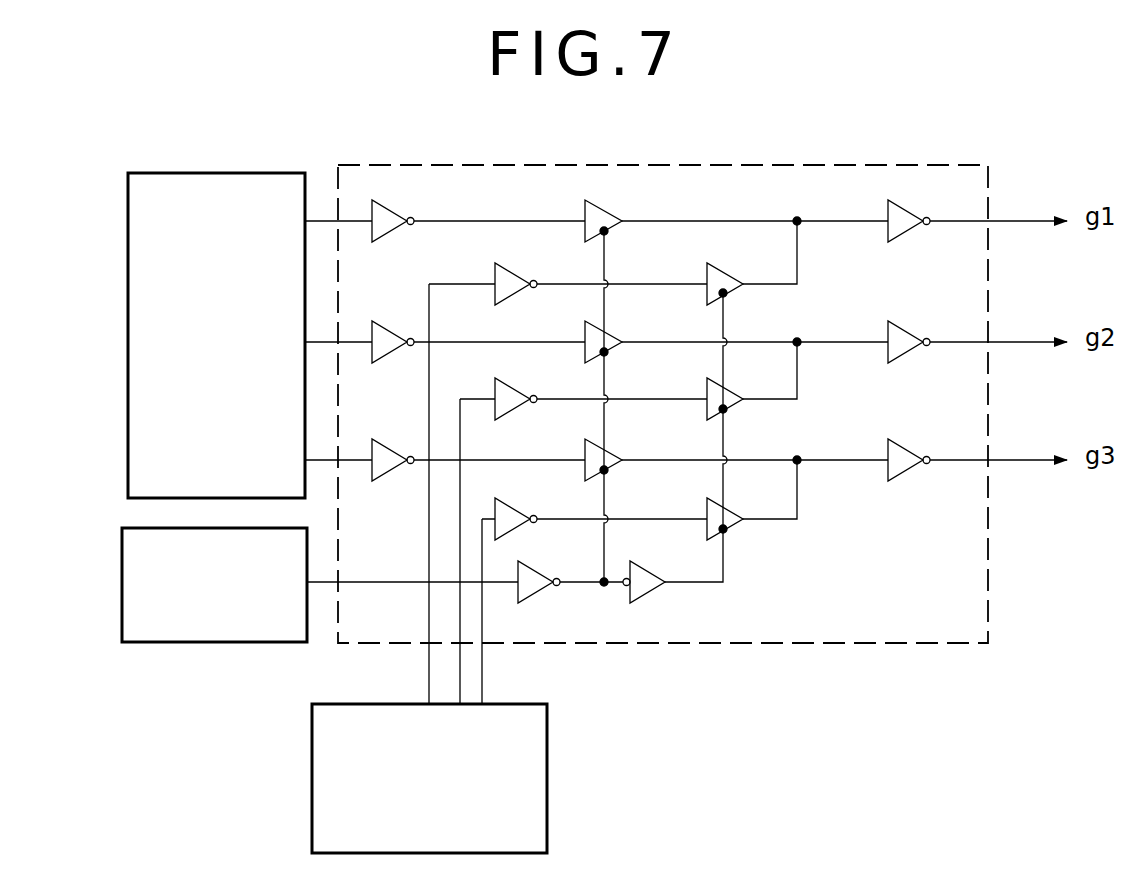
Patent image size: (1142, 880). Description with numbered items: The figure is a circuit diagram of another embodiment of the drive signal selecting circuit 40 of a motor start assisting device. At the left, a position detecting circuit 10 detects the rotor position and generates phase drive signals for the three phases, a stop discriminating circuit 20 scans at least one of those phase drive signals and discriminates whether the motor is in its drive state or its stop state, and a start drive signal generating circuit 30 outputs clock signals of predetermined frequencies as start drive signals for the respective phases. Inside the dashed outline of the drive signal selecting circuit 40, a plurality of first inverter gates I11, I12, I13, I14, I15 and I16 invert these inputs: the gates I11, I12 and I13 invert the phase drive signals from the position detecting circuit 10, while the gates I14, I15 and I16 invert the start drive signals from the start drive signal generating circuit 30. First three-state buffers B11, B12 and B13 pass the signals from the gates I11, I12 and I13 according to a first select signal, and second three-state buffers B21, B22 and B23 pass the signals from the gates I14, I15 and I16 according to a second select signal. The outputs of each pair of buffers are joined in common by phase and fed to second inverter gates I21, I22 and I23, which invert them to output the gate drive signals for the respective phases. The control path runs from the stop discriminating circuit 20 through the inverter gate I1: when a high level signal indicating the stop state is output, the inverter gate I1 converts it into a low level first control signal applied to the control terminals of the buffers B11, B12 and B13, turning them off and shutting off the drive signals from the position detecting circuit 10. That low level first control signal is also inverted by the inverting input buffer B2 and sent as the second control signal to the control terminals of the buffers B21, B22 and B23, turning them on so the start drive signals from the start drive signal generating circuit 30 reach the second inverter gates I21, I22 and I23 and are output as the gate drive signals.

The position detecting circuit 10 is at (128, 287).
The stop discriminating circuit 20 is at (122, 604).
The start drive signal generating circuit 30 is at (312, 805).
The drive signal selecting circuit 40 is at (786, 645).
The first inverter gate I11 is at (478, 211).
The first inverter gate I12 is at (478, 332).
The first inverter gate I13 is at (478, 450).
The first inverter gate I14 is at (601, 274).
The first inverter gate I15 is at (601, 389).
The first inverter gate I16 is at (601, 509).
The inverter gate I1 is at (570, 572).
The second inverter gate I21 is at (977, 210).
The second inverter gate I22 is at (977, 331).
The second inverter gate I23 is at (977, 449).
The first three-state buffer B11 is at (736, 209).
The first three-state buffer B12 is at (736, 337).
The first three-state buffer B13 is at (736, 455).
The second three-state buffer B21 is at (754, 261).
The second three-state buffer B22 is at (754, 379).
The second three-state buffer B23 is at (754, 498).
The inverting input buffer B2 is at (673, 566).